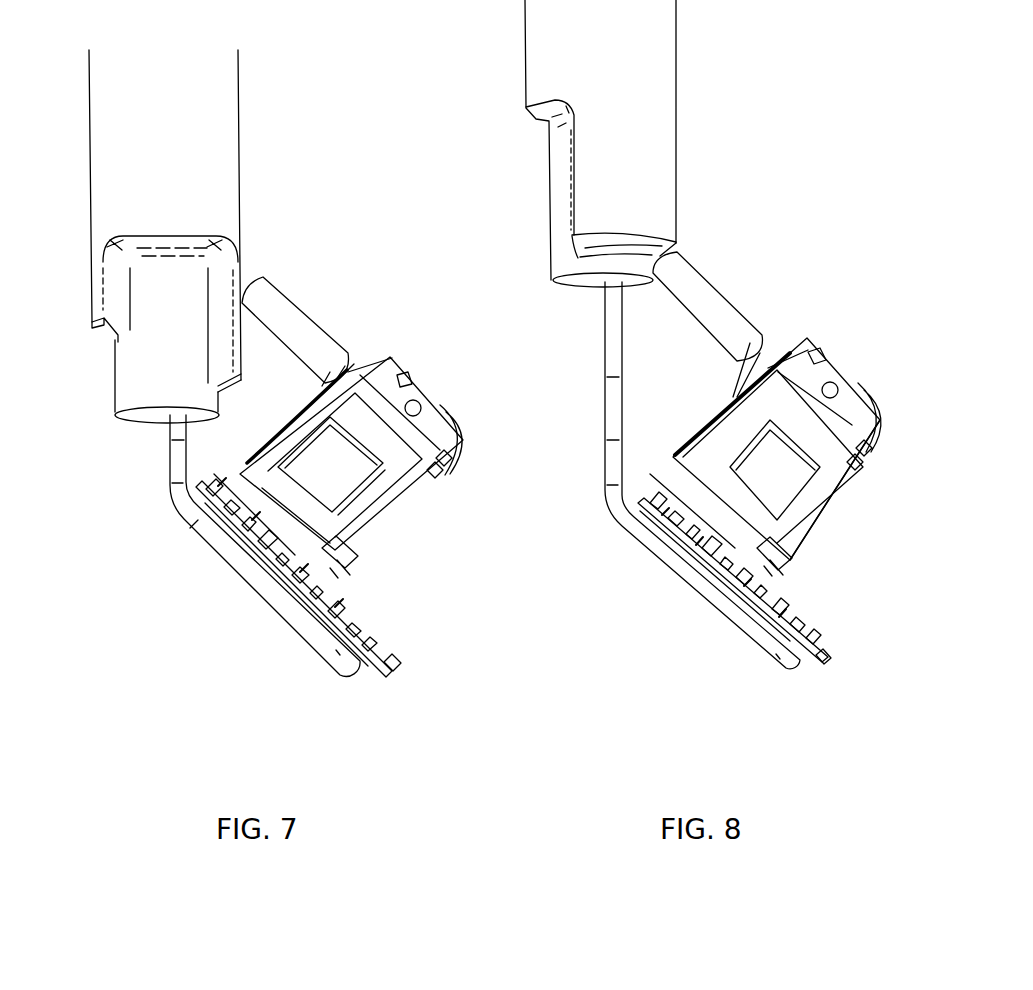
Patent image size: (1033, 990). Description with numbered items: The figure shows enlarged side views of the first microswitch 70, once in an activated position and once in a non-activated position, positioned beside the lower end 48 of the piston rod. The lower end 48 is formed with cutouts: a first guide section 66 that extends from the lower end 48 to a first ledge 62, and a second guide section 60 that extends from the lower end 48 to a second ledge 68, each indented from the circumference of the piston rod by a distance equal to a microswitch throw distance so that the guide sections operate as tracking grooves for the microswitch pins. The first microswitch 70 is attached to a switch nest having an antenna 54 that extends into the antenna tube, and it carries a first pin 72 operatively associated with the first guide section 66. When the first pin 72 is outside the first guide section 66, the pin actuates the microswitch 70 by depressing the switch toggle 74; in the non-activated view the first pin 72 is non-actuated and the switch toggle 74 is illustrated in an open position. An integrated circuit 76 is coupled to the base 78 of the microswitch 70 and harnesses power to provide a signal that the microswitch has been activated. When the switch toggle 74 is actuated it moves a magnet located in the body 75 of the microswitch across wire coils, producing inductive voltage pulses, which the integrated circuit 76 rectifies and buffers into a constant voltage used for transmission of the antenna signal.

In FIG. 7, the lower end 48 is at (117, 417).
In FIG. 7, the antenna 54 is at (212, 552).
In FIG. 8, the antenna 54 is at (690, 597).
In FIG. 7, the second guide section 60 is at (183, 281).
In FIG. 7, the first ledge 62 is at (213, 391).
In FIG. 8, the first ledge 62 is at (607, 232).
In FIG. 8, the first guide section 66 is at (633, 260).
In FIG. 7, the second ledge 68 is at (135, 247).
In FIG. 8, the second ledge 68 is at (542, 115).
In FIG. 7, the first microswitch 70 is at (477, 431).
In FIG. 8, the first microswitch 70 is at (813, 474).
In FIG. 7, the first pin 72 is at (308, 303).
In FIG. 8, the first pin 72 is at (723, 288).
In FIG. 7, the switch toggle 74 is at (353, 360).
In FIG. 8, the switch toggle 74 is at (763, 340).
In FIG. 8, the body 75 is at (835, 477).
In FIG. 7, the integrated circuit 76 is at (345, 602).
In FIG. 8, the integrated circuit 76 is at (734, 569).
In FIG. 8, the base 78 is at (765, 560).